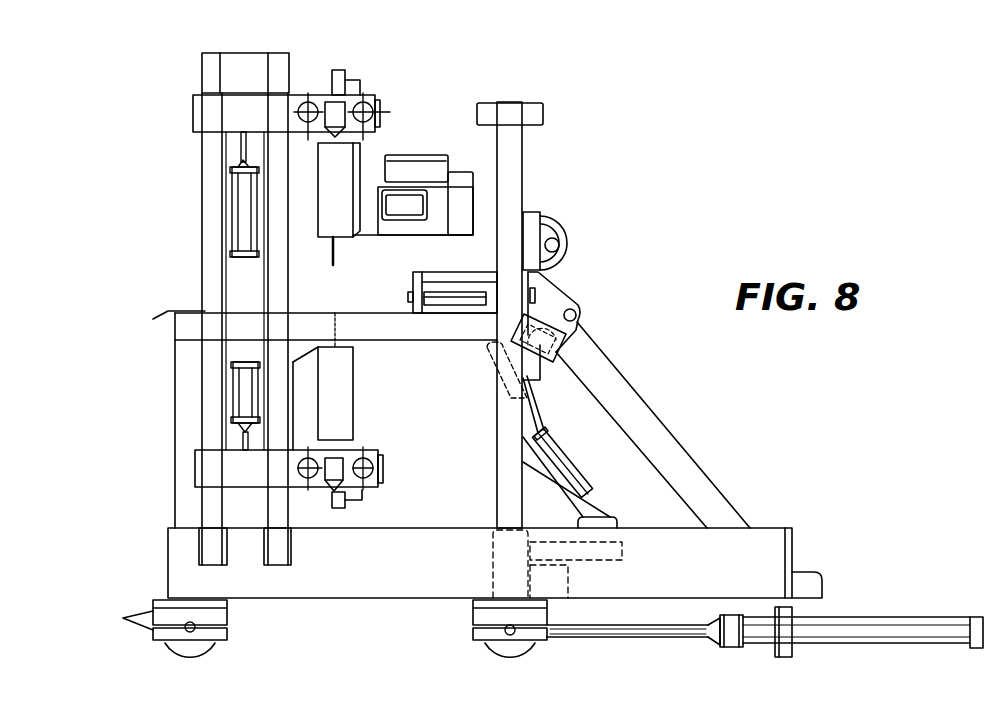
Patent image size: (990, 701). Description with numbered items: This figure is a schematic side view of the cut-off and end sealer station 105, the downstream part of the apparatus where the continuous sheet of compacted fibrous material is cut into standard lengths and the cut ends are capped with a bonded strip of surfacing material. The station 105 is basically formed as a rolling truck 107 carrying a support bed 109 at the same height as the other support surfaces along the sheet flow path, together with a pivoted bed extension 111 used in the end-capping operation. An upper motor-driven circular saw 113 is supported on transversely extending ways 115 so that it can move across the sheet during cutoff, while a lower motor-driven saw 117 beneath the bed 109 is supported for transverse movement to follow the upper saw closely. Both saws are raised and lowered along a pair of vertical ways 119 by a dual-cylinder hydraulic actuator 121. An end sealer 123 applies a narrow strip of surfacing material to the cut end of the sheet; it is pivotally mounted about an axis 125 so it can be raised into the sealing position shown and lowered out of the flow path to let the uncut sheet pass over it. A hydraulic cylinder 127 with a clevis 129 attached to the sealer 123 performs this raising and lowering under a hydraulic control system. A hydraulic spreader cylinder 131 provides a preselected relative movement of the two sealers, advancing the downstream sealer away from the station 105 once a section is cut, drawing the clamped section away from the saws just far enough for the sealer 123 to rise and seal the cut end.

The cut-off and end sealer station 105 is at (576, 103).
The rolling truck 107 is at (131, 604).
The support bed 109 is at (173, 327).
The pivoted bed extension 111 is at (640, 422).
The upper motor-driven circular saw 113 is at (391, 104).
The transversely extending ways 115 is at (367, 101).
The lower motor-driven saw 117 is at (355, 395).
The vertical ways 119 is at (272, 283).
The dual-cylinder hydraulic actuator 121 is at (240, 203).
The end sealer 123 is at (428, 272).
The axis 125 is at (548, 340).
The hydraulic cylinder 127 is at (574, 457).
The clevis 129 is at (493, 364).
The hydraulic spreader cylinder 131 is at (883, 618).